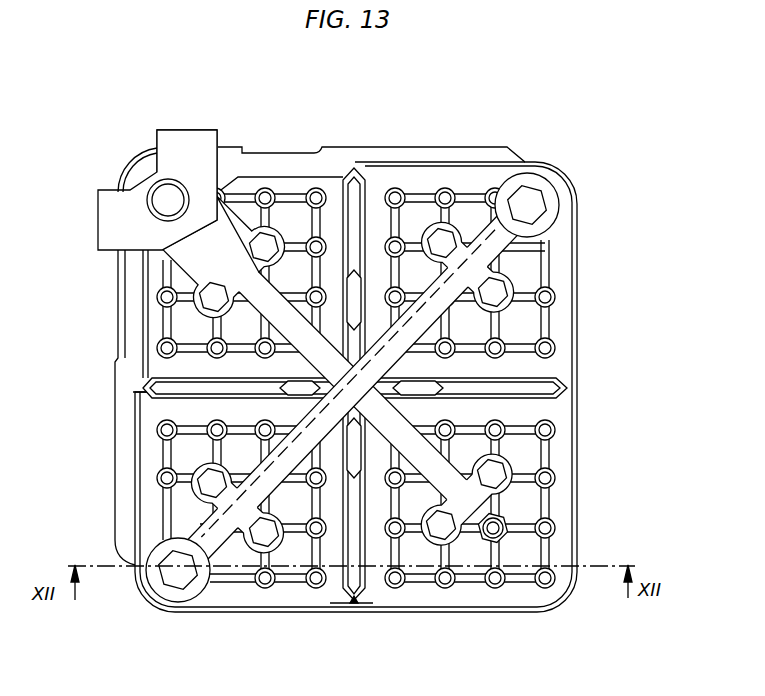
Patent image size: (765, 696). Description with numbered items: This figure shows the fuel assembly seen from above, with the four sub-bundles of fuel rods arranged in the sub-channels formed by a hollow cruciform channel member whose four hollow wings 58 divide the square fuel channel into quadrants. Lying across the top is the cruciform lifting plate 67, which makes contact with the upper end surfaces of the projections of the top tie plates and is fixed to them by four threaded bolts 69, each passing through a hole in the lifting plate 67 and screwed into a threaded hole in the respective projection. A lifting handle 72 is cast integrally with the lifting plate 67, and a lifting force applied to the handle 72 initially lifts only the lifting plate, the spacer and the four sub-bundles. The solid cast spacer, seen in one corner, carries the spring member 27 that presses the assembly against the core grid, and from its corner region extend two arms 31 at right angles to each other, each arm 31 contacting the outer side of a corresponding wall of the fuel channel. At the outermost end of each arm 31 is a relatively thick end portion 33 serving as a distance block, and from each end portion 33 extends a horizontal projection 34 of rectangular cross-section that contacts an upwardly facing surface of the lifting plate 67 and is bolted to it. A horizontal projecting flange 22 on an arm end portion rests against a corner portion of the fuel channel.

The horizontal projecting flange 22 is at (128, 162).
The spring member 27 is at (188, 138).
The arm 31 is at (300, 163).
The end portion 33 is at (423, 150).
The horizontal projection 34 is at (563, 250).
The hollow wing 58 is at (568, 385).
The cruciform lifting plate 67 is at (285, 323).
The threaded bolt 69 is at (452, 522).
The lifting handle 72 is at (290, 462).